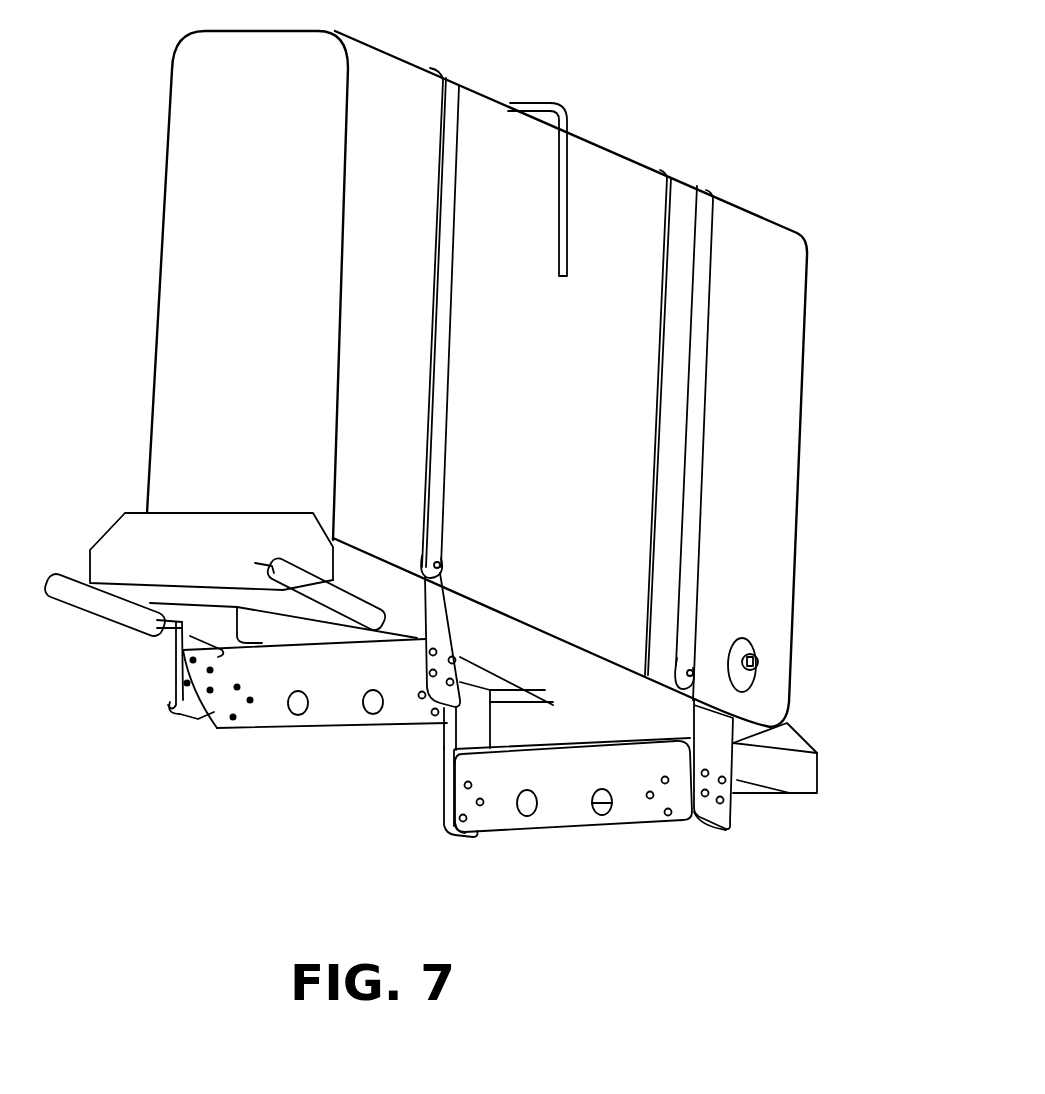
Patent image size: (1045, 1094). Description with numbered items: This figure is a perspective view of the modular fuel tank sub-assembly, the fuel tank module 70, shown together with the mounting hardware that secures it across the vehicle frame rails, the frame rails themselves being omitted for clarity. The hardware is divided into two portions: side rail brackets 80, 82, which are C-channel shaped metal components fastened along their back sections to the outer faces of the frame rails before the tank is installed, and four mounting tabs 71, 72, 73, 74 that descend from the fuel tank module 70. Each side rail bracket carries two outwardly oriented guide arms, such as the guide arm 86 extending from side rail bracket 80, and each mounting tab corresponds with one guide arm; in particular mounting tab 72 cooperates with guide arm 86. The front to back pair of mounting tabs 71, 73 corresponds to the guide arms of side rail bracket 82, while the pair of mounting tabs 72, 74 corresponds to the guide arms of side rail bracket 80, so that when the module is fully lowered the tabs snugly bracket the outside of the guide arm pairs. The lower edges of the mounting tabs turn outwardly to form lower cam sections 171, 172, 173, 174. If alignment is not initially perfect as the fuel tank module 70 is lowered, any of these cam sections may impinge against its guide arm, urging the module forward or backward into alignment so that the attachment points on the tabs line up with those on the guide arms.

The fuel tank module 70 is at (800, 163).
The mounting tab 71 is at (445, 832).
The mounting tab 72 is at (176, 668).
The mounting tab 73 is at (780, 728).
The mounting tab 74 is at (450, 612).
The side rail bracket 80 is at (337, 728).
The side rail bracket 82 is at (587, 830).
The guide arm 86 is at (220, 713).
The lower cam section 171 is at (463, 832).
The lower cam section 172 is at (170, 710).
The lower cam section 173 is at (737, 830).
The lower cam section 174 is at (442, 745).